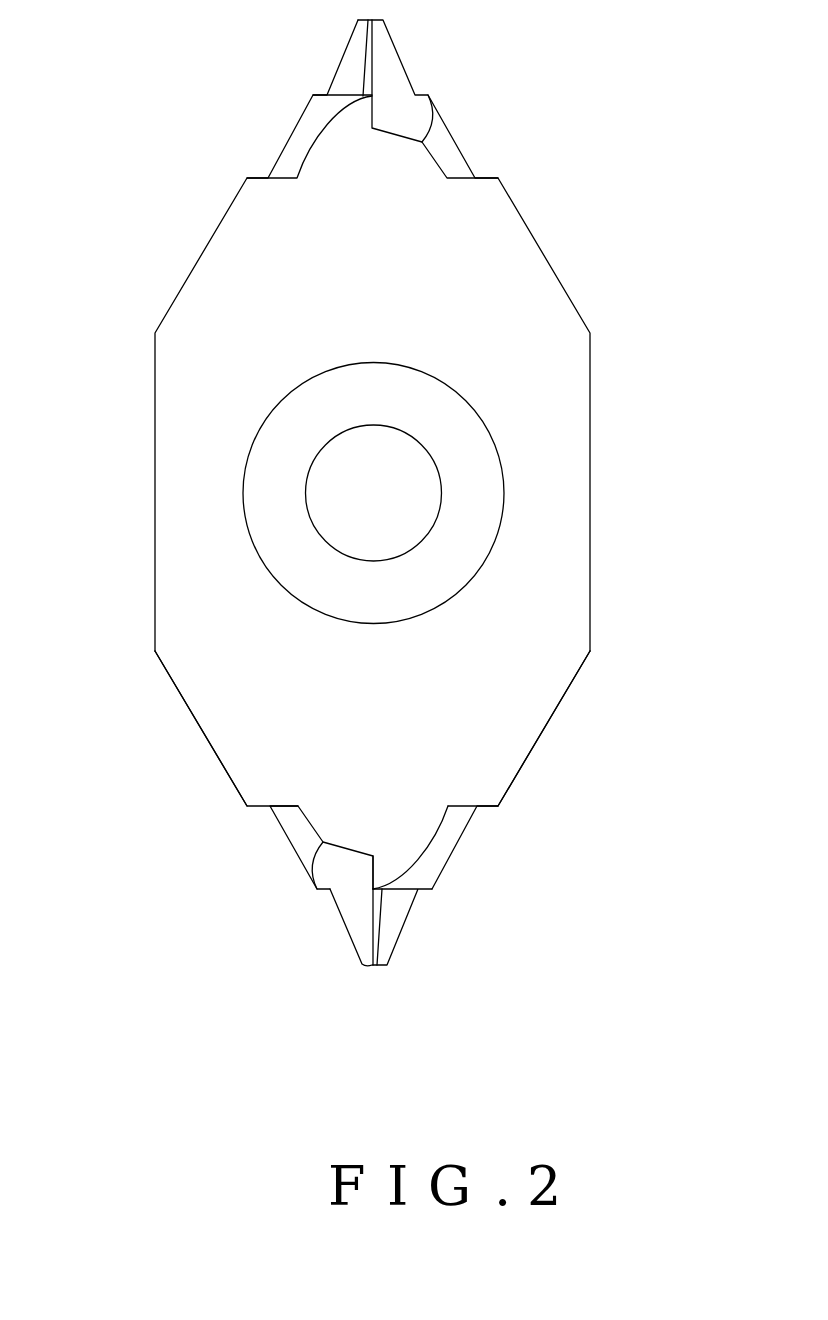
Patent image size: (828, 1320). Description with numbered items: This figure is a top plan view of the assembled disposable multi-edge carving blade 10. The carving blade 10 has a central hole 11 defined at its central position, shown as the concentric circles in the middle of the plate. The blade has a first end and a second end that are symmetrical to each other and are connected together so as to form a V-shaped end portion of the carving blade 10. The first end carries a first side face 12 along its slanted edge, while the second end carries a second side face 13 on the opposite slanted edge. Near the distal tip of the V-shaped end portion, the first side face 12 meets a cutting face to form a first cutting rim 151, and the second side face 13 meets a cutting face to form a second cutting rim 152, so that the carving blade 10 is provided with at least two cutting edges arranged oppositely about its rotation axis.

The disposable multi-edge carving blade 10 is at (538, 318).
The central hole 11 is at (330, 467).
The first side face 12 is at (537, 748).
The second side face 13 is at (193, 718).
The first cutting rim 151 is at (377, 963).
The second cutting rim 152 is at (372, 965).